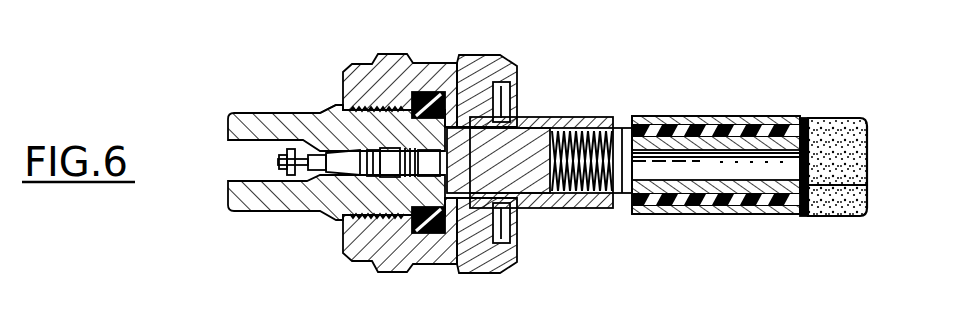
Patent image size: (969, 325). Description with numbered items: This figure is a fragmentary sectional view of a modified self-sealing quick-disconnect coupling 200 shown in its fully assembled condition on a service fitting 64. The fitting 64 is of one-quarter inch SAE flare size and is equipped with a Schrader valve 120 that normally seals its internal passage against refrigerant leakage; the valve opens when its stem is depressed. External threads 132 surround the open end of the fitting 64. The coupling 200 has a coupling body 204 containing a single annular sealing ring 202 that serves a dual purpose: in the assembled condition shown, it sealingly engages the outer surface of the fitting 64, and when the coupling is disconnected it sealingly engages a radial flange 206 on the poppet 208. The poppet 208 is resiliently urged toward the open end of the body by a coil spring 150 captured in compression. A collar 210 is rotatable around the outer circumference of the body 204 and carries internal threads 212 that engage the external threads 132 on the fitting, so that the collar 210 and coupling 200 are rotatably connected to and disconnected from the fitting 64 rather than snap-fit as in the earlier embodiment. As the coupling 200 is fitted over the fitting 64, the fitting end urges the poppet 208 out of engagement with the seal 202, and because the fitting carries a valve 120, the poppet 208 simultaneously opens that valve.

The service fitting 64 is at (266, 214).
The Schrader valve 120 is at (318, 142).
The external threads 132 is at (336, 116).
The coil spring 150 is at (583, 125).
The self-sealing quick-disconnect coupling 200 is at (490, 52).
The annular sealing ring 202 is at (432, 72).
The coupling body 204 is at (512, 125).
The radial flange 206 is at (470, 274).
The poppet 208 is at (542, 205).
The collar 210 is at (375, 270).
The internal threads 212 is at (344, 210).